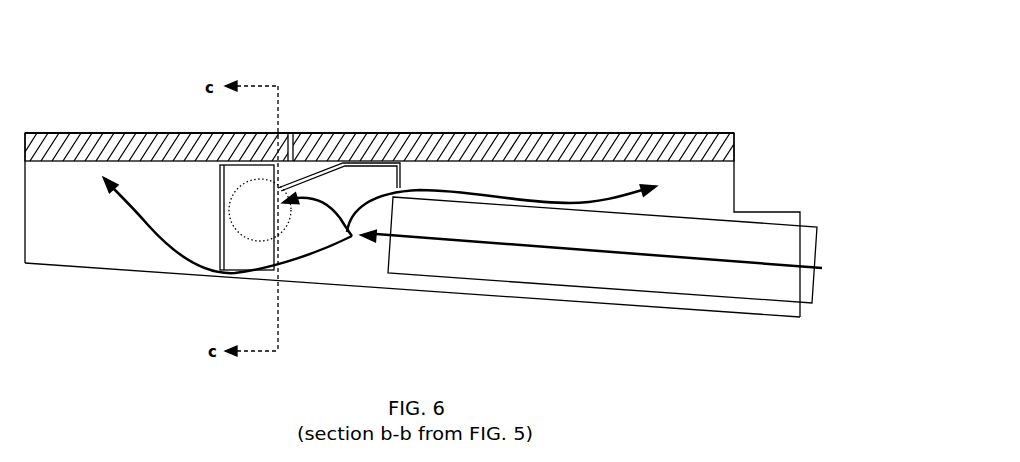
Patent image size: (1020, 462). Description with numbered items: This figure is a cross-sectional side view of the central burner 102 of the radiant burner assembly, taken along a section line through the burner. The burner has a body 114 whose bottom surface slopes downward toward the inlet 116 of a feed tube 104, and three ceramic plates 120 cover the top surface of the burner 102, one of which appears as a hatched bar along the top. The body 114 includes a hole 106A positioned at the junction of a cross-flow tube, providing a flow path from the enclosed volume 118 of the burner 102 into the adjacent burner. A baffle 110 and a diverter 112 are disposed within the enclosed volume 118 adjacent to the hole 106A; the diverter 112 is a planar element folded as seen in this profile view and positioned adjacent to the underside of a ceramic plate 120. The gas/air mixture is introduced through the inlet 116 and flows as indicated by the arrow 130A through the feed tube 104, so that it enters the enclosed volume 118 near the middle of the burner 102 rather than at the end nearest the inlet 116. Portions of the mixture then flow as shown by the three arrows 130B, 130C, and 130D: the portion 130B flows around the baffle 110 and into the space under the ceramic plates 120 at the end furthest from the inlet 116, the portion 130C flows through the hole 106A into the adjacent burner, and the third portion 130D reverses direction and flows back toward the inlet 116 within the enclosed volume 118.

The central burner 102 is at (213, 33).
The feed tube 104 is at (597, 288).
The hole 106A is at (293, 226).
The baffle 110 is at (220, 197).
The diverter 112 is at (400, 180).
The body 114 is at (173, 275).
The inlet 116 is at (828, 230).
The enclosed volume 118 is at (374, 278).
The ceramic plate 120 is at (117, 140).
The arrow 130A is at (757, 264).
The arrow 130B is at (143, 222).
The arrow 130C is at (320, 210).
The arrow 130D is at (564, 200).